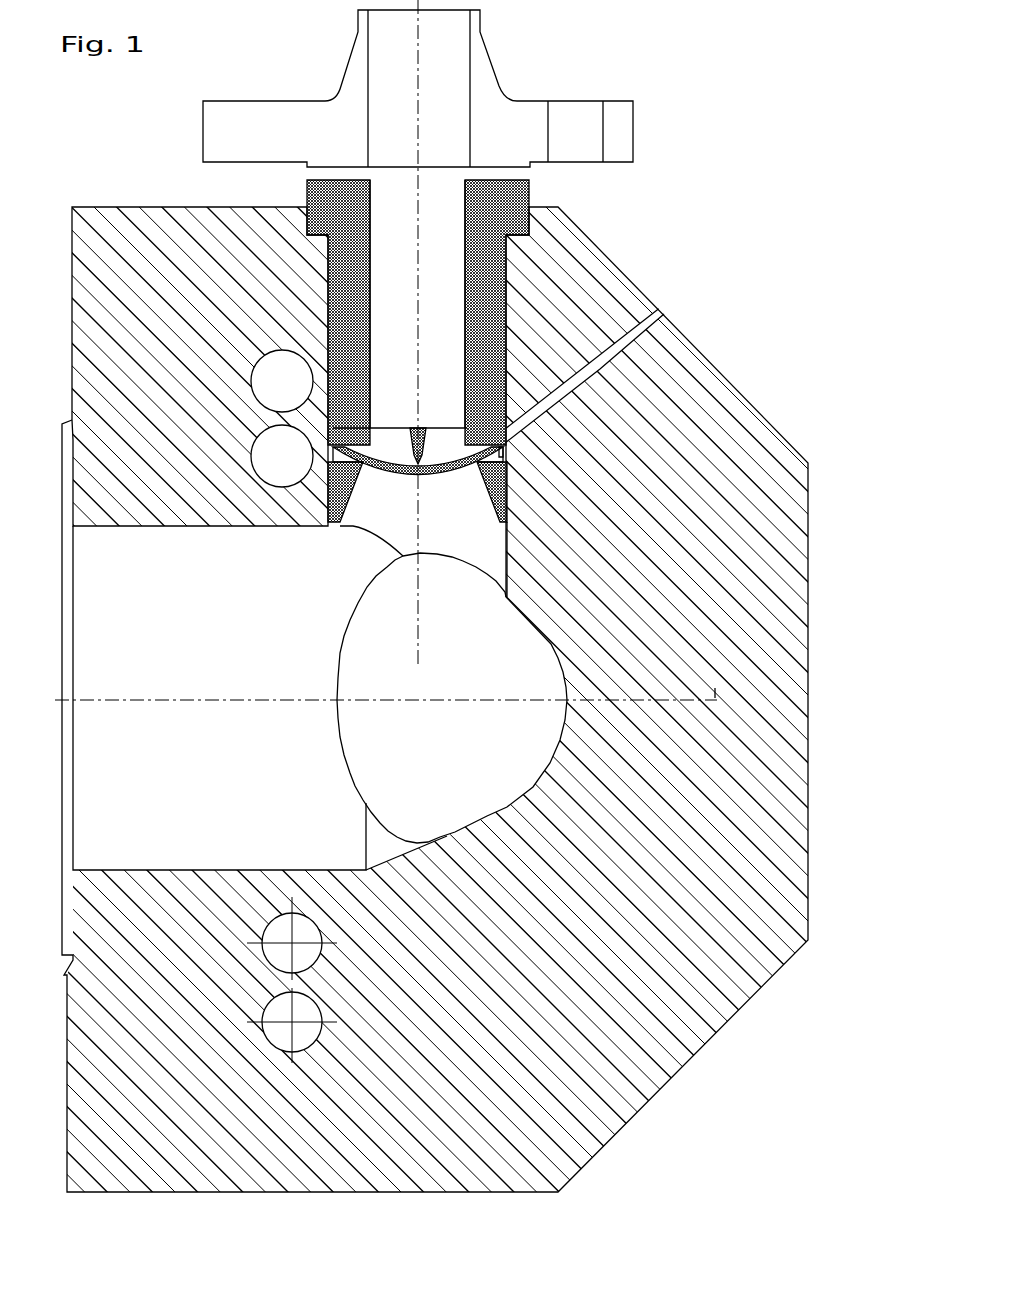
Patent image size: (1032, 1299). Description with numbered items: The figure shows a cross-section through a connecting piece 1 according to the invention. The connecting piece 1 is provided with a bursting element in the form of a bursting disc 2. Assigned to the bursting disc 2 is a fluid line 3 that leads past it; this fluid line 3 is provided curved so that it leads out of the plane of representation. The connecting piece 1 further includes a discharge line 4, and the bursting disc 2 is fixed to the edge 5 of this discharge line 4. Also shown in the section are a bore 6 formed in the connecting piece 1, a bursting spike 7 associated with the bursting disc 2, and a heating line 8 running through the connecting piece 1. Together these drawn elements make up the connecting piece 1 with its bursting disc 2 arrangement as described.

The connecting piece 1 is at (532, 188).
The bursting disc 2 is at (457, 458).
The fluid line 3 is at (468, 775).
The discharge line 4 is at (445, 250).
The edge 5 is at (358, 448).
The bore 6 is at (470, 470).
The bursting spike 7 is at (423, 425).
The heating line 8 is at (270, 372).